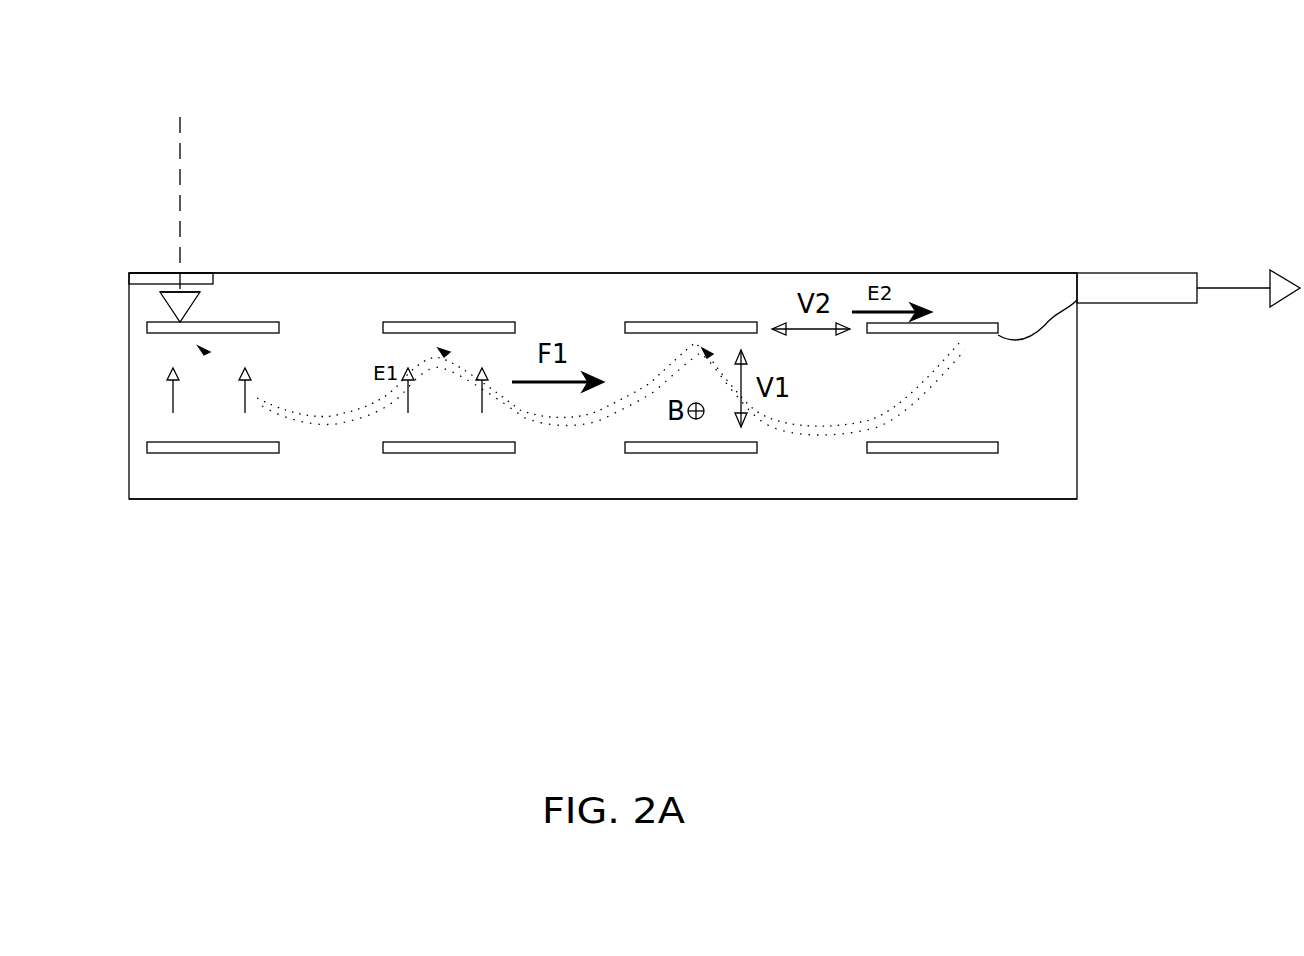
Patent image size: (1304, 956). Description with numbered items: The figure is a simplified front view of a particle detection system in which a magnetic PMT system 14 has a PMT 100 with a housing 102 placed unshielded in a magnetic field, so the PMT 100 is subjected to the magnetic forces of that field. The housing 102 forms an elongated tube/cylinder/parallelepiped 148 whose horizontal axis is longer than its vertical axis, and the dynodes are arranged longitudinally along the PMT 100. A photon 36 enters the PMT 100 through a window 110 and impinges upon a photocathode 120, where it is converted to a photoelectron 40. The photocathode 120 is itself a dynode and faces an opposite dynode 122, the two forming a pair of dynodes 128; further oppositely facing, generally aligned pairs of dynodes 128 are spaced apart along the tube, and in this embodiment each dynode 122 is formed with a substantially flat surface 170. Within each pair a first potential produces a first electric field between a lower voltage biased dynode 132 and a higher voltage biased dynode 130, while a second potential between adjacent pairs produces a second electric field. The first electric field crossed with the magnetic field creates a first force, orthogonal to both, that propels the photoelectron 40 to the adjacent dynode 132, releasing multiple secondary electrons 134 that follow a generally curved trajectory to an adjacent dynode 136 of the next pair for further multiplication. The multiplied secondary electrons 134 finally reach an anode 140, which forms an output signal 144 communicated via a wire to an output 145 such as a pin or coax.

The magnetic PMT system 14 is at (98, 102).
The photon 36 is at (180, 203).
The photoelectron 40 is at (228, 380).
The PMT 100 is at (645, 273).
The housing 102 is at (768, 273).
The window 110 is at (157, 282).
The photocathode 120 is at (147, 332).
The dynode 122 is at (147, 447).
The pair of dynodes 128 is at (279, 333).
The higher voltage biased dynode 130 is at (383, 442).
The lower voltage biased dynode 132 is at (383, 325).
The secondary electrons 134 is at (563, 420).
The adjacent dynode 136 is at (680, 326).
The anode 140 is at (940, 323).
The output signal 144 is at (1232, 288).
The output 145 is at (1197, 273).
The elongated tube/cylinder/parallelepiped 148 is at (262, 500).
The substantially flat surface 170 is at (930, 453).